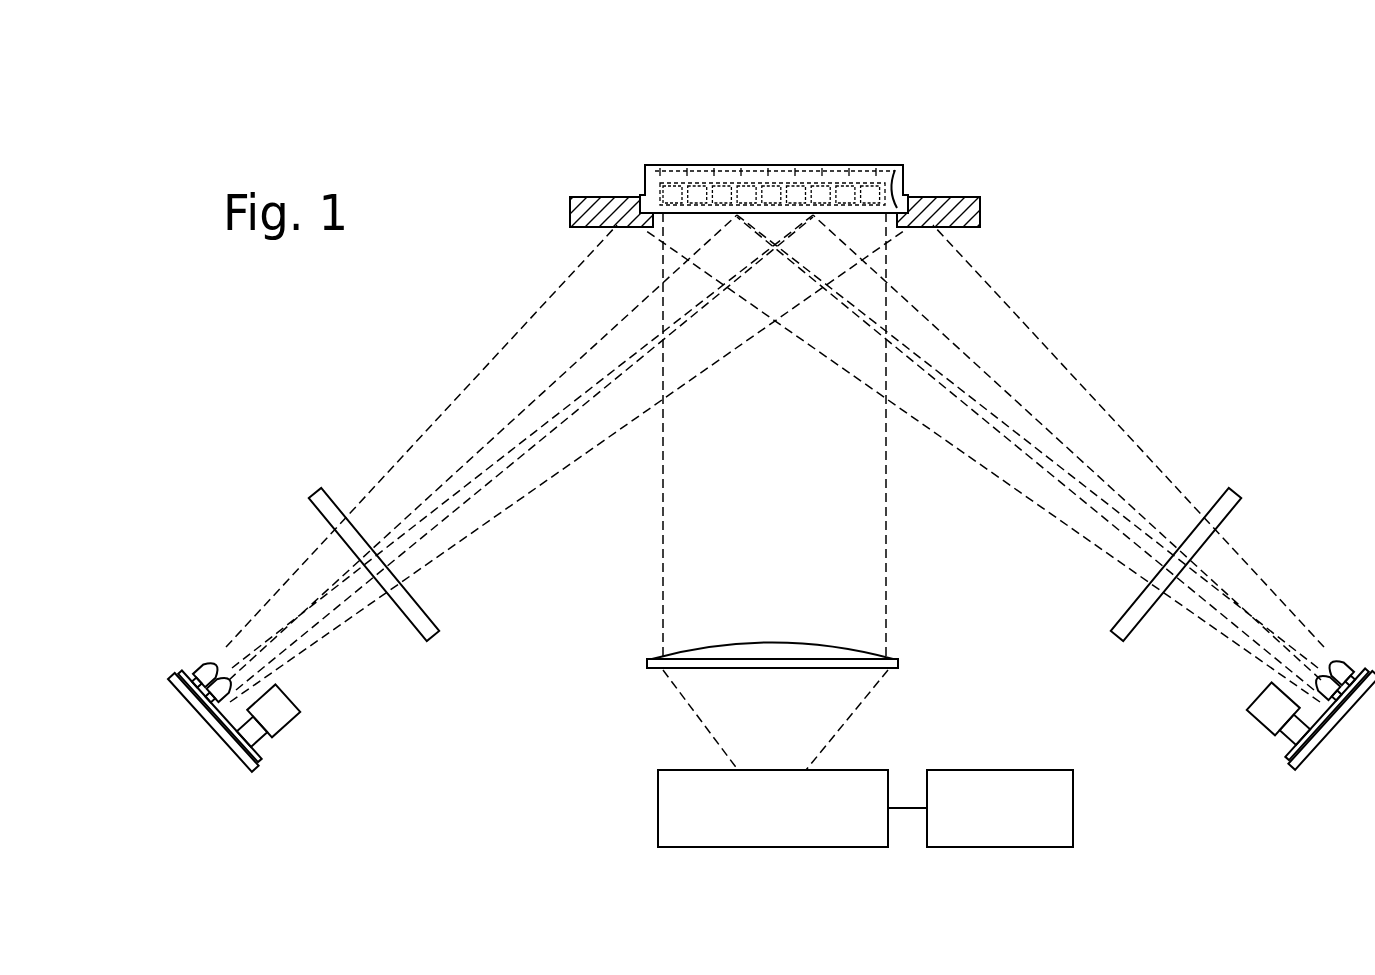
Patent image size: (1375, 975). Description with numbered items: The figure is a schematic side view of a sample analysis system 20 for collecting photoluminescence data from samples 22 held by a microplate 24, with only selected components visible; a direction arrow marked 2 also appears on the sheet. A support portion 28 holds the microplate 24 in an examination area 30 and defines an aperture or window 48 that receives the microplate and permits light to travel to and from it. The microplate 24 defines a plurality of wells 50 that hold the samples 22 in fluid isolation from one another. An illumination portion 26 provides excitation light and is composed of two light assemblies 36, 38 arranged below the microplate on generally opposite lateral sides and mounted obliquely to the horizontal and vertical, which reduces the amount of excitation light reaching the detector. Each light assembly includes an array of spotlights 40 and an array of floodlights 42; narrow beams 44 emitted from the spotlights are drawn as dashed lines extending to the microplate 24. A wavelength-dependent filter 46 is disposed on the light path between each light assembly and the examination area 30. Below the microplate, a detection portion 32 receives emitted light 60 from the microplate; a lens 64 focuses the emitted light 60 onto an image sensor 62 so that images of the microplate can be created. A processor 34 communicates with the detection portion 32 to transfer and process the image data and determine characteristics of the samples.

The section view indicator 2 is at (128, 135).
The sample analysis system 20 is at (526, 102).
The samples 22 is at (731, 185).
The microplate 24 is at (645, 178).
The illumination portion 26 is at (232, 496).
The support portion 28 is at (940, 197).
The examination area 30 is at (807, 135).
The detection portion 32 is at (730, 768).
The processor 34 is at (1076, 808).
The light assembly 36 is at (236, 662).
The light assembly 38 is at (1357, 622).
The spotlights 40 is at (214, 668).
The floodlights 42 is at (288, 728).
The narrow beams 44 is at (258, 612).
The wavelength-dependent filter 46 is at (430, 612).
The aperture 48 is at (903, 207).
The wells 50 is at (867, 170).
The emitted light 60 is at (662, 612).
The image sensor 62 is at (775, 770).
The lens 64 is at (900, 660).